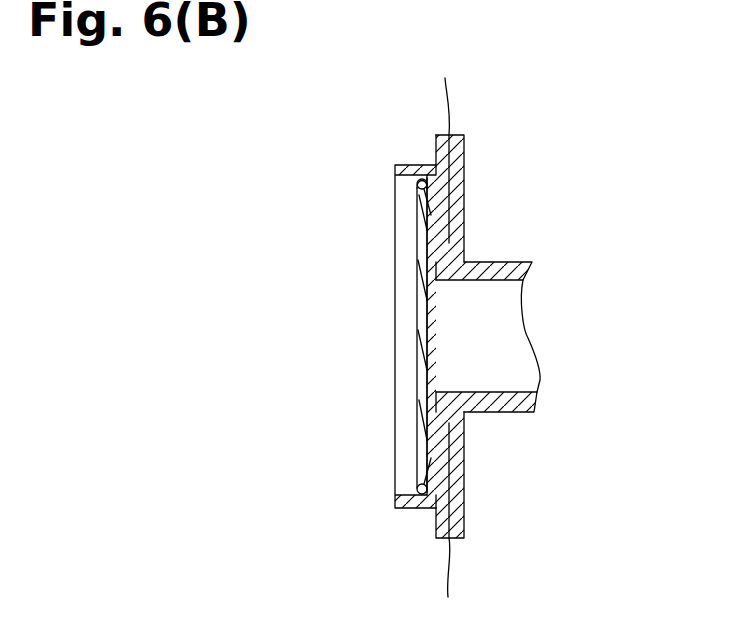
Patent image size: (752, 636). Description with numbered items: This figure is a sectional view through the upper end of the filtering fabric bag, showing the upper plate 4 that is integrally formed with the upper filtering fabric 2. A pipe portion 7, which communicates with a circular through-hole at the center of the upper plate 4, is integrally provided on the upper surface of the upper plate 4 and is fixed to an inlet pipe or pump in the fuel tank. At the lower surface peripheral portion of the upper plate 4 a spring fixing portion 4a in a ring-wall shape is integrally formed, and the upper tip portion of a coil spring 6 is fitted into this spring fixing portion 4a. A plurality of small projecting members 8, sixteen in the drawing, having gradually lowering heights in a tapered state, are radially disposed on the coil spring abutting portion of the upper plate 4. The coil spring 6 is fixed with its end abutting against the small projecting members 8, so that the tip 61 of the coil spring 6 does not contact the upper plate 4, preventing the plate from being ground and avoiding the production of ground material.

The upper filtering fabric 2 is at (449, 108).
The upper plate 4 is at (464, 185).
The spring fixing portion 4a is at (400, 167).
The coil spring 6 is at (418, 307).
The pipe portion 7 is at (516, 262).
The small projecting members 8 is at (428, 398).
The tip of the coil spring 61 is at (423, 503).